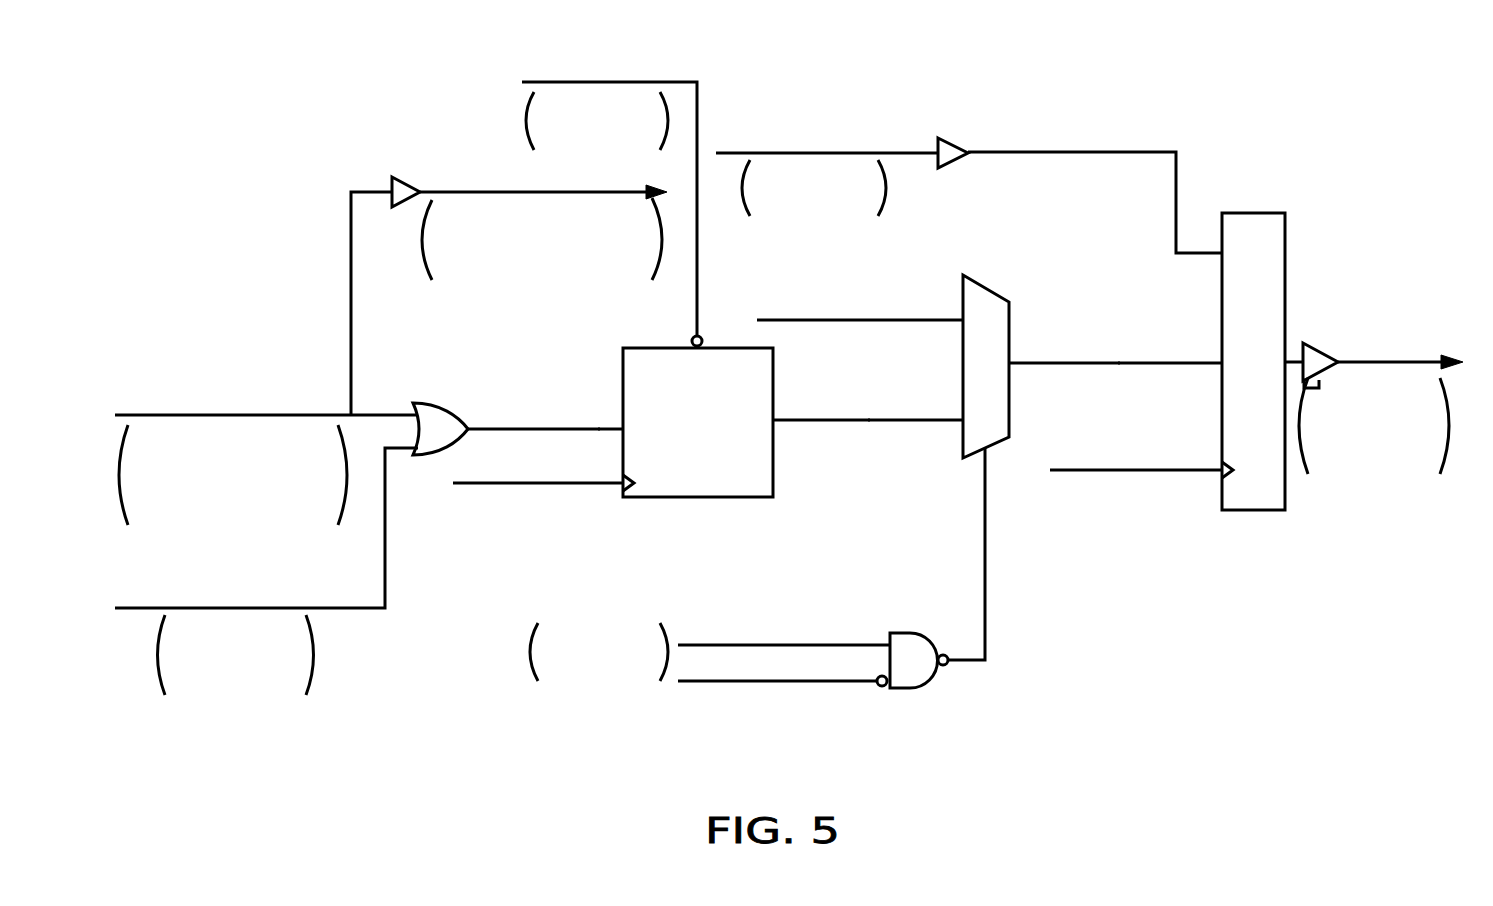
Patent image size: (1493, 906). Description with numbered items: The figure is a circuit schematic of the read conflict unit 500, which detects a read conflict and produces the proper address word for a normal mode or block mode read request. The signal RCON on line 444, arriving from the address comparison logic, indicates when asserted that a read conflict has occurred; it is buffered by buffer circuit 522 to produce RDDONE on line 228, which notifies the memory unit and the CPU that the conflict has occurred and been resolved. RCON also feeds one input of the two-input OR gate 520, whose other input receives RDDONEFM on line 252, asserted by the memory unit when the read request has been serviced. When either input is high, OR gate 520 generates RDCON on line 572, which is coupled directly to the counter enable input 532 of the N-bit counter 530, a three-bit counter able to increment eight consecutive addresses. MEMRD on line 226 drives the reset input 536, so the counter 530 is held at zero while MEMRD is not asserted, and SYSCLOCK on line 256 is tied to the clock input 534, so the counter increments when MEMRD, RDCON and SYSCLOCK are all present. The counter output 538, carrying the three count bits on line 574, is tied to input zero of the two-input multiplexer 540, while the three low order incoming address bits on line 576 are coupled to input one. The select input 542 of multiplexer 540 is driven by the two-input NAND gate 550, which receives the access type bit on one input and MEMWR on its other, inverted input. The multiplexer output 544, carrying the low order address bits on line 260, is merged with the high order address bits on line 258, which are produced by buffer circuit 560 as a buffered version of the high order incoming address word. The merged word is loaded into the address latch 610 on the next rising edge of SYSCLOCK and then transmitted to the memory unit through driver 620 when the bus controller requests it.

The read conflict unit 500 is at (202, 90).
The line carrying MEMRD 226 is at (699, 88).
The line carrying RDDONE 228 is at (613, 190).
The line carrying RDDONEFM 252 is at (367, 612).
The line carrying SYSCLOCK 256 is at (475, 487).
The line carrying ADDV 31:5 258 is at (1173, 197).
The line carrying ADDV 4:2 260 is at (1133, 366).
The line carrying RCON 444 is at (388, 413).
The two-input OR gate 520 is at (445, 400).
The buffer circuit 522 is at (394, 176).
The N-bit counter 530 is at (755, 498).
The counter enable input 532 is at (618, 422).
The clock input 534 is at (636, 489).
The reset input 536 is at (692, 337).
The counter output 538 is at (783, 423).
The two-input multiplexer 540 is at (982, 288).
The select input 542 is at (982, 462).
The multiplexer output 544 is at (1020, 367).
The two-input NAND gate 550 is at (927, 632).
The buffer circuit 560 is at (950, 165).
The line carrying RDCON 572 is at (478, 426).
The line carrying CNT 2:0 574 is at (890, 422).
The line carrying ADDRIN 4:2 576 is at (868, 322).
The address latch 610 is at (1265, 212).
The driver 620 is at (1322, 342).